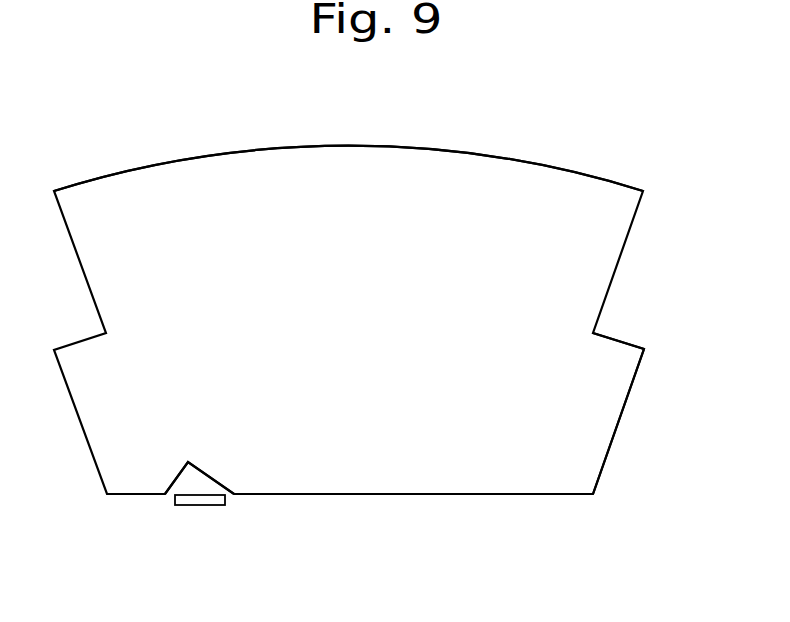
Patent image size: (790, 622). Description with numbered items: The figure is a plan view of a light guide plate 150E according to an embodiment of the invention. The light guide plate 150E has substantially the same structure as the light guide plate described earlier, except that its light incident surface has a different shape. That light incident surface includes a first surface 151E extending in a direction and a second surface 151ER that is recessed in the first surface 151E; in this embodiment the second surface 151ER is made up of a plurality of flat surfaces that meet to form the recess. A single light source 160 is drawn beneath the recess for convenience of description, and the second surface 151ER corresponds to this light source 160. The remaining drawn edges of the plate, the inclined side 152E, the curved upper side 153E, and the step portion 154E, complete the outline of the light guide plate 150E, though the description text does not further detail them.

The light guide plate 150E is at (541, 156).
The first surface 151E is at (413, 495).
The second edge (inclined side) 152E is at (622, 420).
The third edge (curved upper side) 153E is at (350, 143).
The step portion 154E is at (629, 341).
The second surface 151ER is at (212, 478).
The light source 160 is at (202, 506).